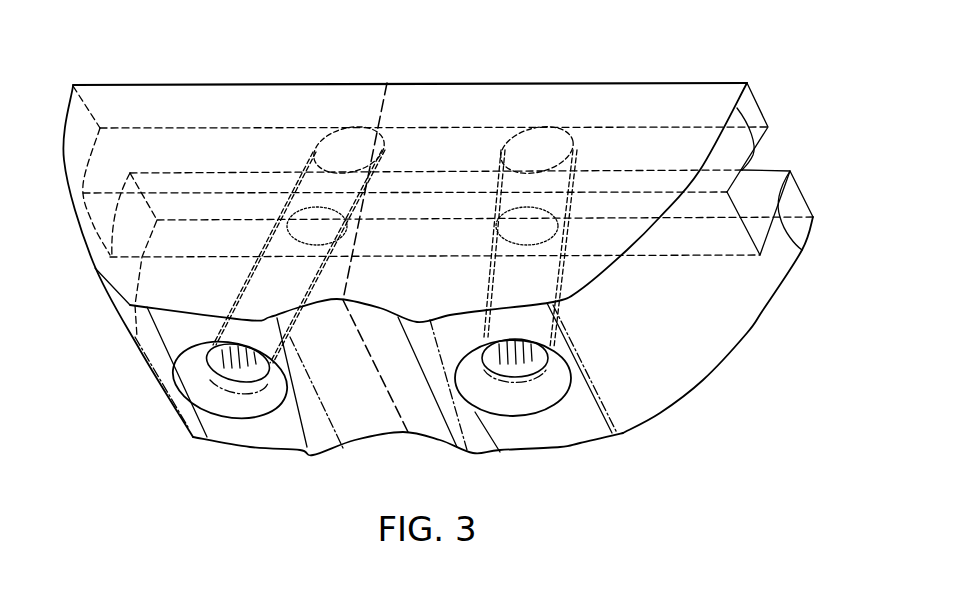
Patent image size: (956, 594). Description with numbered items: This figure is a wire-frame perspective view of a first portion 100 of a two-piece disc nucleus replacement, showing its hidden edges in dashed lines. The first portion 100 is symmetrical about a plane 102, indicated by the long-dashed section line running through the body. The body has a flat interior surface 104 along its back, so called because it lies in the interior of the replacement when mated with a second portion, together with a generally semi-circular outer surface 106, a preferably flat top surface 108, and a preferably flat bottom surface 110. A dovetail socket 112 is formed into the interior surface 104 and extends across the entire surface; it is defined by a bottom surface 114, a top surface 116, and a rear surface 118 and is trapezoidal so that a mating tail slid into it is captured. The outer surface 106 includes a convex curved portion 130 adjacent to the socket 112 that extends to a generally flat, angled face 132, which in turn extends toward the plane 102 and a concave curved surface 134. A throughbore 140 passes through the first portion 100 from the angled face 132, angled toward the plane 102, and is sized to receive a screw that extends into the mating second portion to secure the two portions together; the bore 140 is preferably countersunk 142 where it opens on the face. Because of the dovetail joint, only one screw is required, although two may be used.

The first portion 100 is at (110, 410).
The plane 102 is at (380, 118).
The flat interior surface 104 is at (617, 83).
The outer surface 106 is at (667, 345).
The top surface 108 is at (479, 113).
The bottom surface 110 is at (703, 380).
The dovetail socket 112 is at (773, 185).
The bottom surface 114 is at (802, 250).
The top surface 116 is at (737, 108).
The rear surface 118 is at (739, 220).
The convex curved portion 130 is at (733, 323).
The angled face 132 is at (567, 432).
The concave curved surface 134 is at (432, 418).
The throughbore 140 is at (513, 218).
The countersink 142 is at (500, 393).